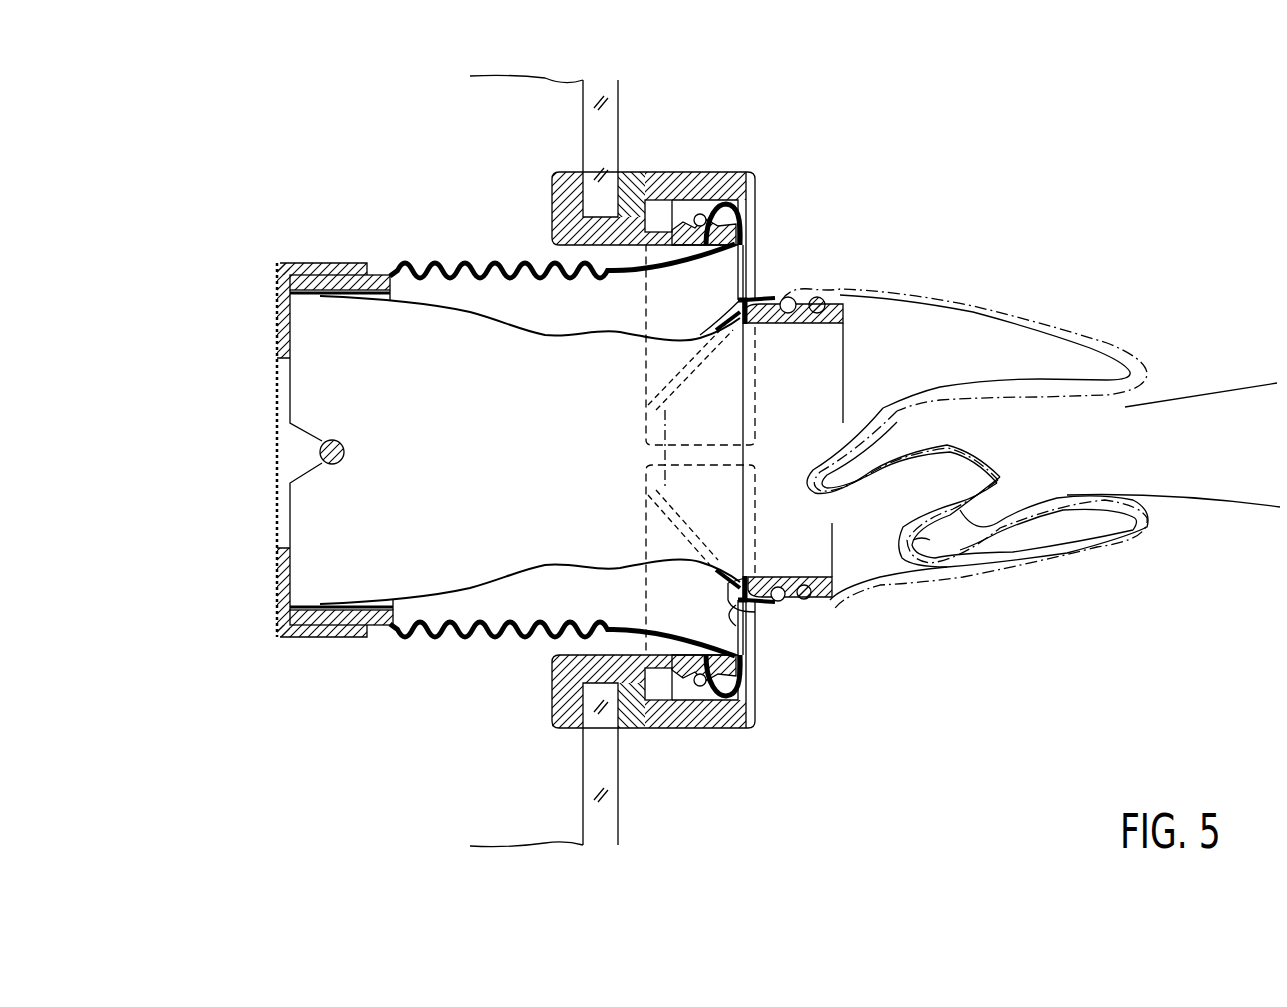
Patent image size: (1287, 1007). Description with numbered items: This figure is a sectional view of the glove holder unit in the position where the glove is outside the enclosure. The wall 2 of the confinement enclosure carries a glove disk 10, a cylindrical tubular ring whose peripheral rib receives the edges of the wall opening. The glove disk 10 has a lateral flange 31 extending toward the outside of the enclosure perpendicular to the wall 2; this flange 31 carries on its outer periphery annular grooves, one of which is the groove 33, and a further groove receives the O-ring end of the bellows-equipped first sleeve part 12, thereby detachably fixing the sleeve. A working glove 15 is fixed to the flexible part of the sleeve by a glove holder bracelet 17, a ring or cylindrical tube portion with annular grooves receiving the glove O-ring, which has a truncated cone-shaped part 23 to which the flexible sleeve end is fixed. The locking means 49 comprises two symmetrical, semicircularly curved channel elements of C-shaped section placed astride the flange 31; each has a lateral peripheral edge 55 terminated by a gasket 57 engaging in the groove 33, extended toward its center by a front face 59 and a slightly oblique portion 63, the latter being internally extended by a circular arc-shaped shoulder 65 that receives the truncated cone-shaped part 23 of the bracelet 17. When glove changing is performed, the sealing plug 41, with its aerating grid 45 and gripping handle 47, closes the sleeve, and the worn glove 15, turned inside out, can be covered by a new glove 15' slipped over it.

The wall 2 is at (608, 821).
The glove disk 10 is at (553, 683).
The first part equipped with bellows 12 is at (468, 640).
The working glove 15 is at (1029, 389).
The new glove 15' is at (1055, 542).
The glove holder bracelet 17 is at (833, 303).
The truncated cone-shaped part 23 is at (770, 603).
The lateral flange 31 is at (658, 685).
The groove 33 is at (698, 202).
The sealing plug 41 is at (282, 590).
The aerating grid 45 is at (277, 401).
The gripping handle 47 is at (345, 451).
The locking means 49 is at (768, 173).
The lateral peripheral edge 55 is at (757, 715).
The gasket 57 is at (652, 215).
The front face 59 is at (748, 234).
The oblique portion 63 is at (737, 616).
The circular arc-shaped shoulder 65 is at (738, 314).